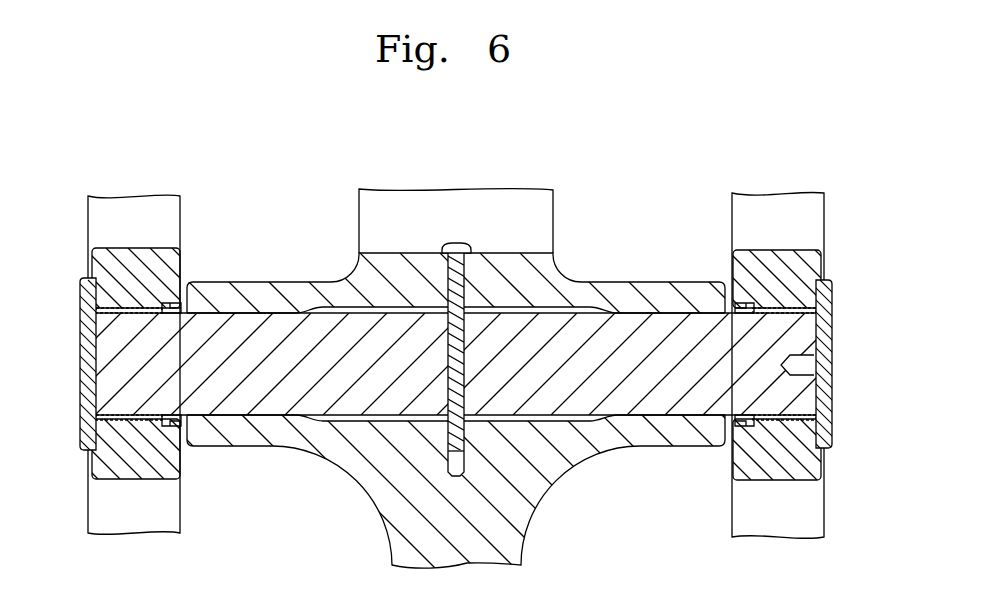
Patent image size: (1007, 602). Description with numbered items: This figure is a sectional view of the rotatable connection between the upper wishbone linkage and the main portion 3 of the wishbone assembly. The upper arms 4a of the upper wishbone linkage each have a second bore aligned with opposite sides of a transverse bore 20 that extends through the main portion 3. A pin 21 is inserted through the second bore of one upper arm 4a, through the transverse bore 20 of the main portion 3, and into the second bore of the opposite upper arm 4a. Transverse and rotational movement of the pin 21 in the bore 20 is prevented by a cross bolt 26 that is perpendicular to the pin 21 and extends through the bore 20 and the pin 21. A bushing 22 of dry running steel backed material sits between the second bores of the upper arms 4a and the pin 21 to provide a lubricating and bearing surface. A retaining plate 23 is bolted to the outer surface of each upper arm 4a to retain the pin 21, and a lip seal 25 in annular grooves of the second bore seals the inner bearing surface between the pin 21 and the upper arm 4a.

The main portion 3 is at (387, 263).
The upper arm 4a is at (133, 232).
The transverse bore 20 is at (512, 310).
The pin 21 is at (583, 337).
The bushing 22 is at (103, 316).
The retaining plate 23 is at (88, 378).
The lip seal 25 is at (182, 307).
The cross bolt 26 is at (453, 243).